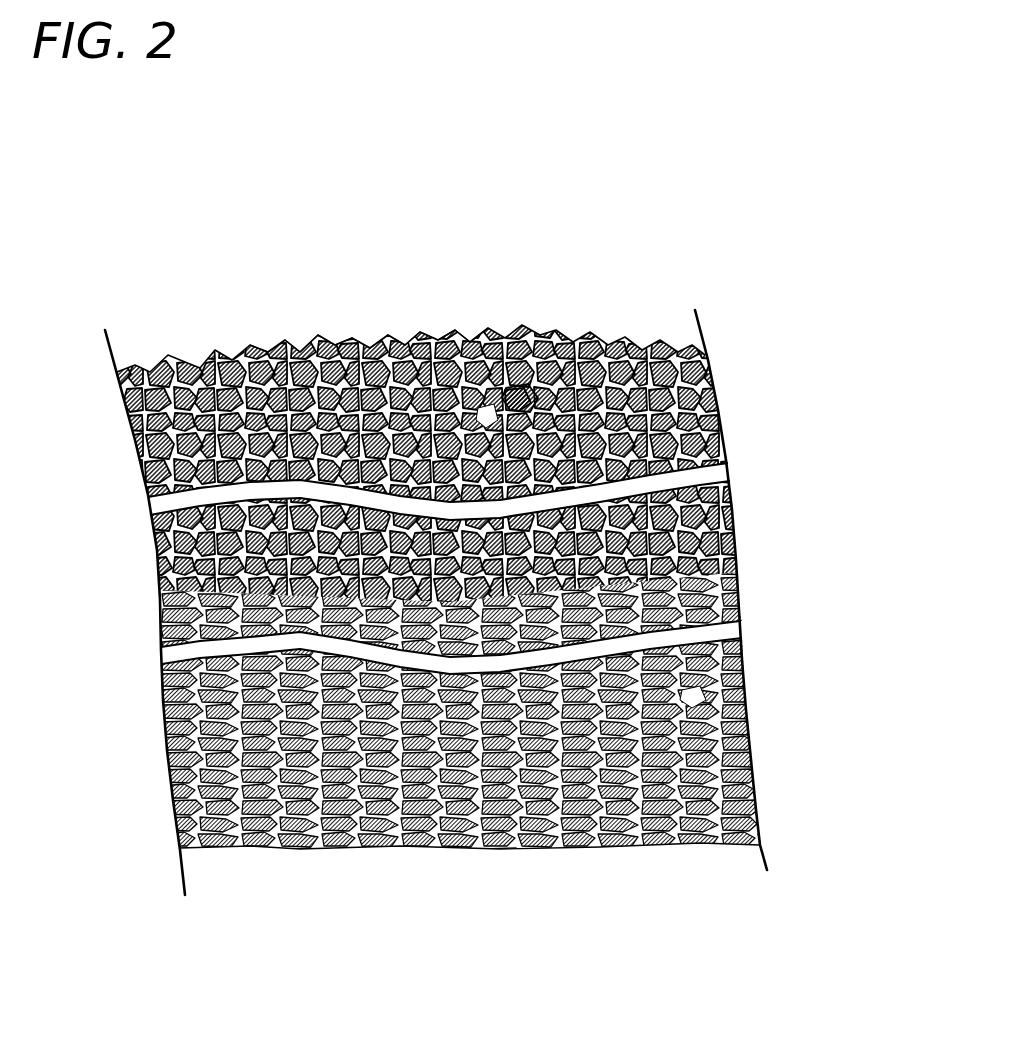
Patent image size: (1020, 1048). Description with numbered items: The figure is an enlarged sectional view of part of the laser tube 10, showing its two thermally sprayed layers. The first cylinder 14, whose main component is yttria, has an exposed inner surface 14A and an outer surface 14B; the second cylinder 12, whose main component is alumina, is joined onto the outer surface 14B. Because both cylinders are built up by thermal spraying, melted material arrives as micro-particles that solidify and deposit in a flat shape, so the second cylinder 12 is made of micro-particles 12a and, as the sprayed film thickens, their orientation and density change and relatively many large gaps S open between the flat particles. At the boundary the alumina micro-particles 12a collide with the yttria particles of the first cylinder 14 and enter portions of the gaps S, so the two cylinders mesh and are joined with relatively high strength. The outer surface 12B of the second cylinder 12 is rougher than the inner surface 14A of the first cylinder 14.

The laser tube 10 is at (436, 582).
The second cylinder 12 is at (423, 348).
The outer surface of the second cylinder 12B is at (379, 308).
The micro-particles 12a is at (522, 405).
The first cylinder 14 is at (455, 626).
The inner surface of the first cylinder 14A is at (491, 882).
The outer surface of the first cylinder 14B is at (487, 577).
The gaps S is at (485, 412).